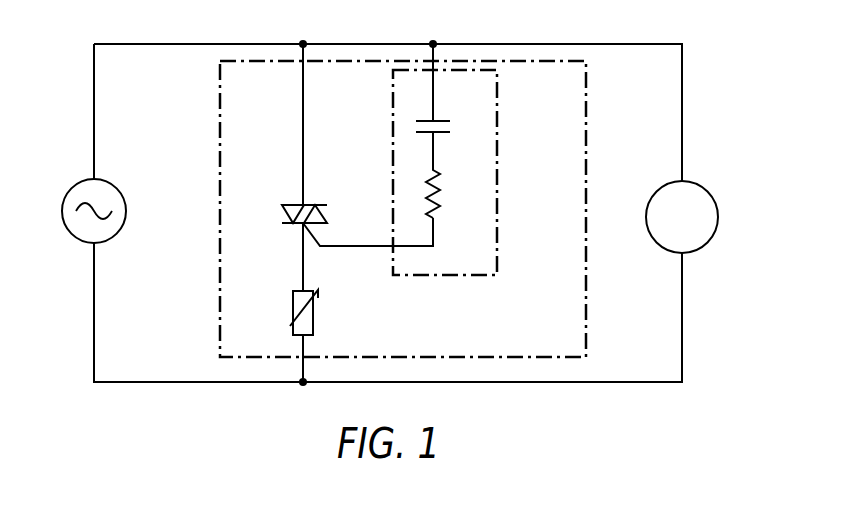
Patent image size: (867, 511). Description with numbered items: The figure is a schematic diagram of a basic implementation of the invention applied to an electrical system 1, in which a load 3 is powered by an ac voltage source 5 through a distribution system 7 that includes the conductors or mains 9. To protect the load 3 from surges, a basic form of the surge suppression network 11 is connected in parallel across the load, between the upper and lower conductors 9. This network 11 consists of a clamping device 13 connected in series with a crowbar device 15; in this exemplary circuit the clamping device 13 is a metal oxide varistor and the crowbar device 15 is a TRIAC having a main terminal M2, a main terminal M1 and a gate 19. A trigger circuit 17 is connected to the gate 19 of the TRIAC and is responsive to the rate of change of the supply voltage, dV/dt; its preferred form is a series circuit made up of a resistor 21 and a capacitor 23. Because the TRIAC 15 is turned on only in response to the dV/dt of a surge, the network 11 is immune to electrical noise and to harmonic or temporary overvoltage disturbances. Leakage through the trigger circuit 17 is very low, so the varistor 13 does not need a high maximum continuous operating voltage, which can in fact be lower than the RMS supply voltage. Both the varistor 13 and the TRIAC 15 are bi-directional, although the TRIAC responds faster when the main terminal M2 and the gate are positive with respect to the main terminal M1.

The electrical system 1 is at (779, 77).
The load 3 is at (700, 186).
The ac voltage source 5 is at (80, 186).
The distribution system 7 is at (695, 322).
The conductors or mains 9 is at (190, 44).
The surge suppression network 11 is at (220, 130).
The clamping device 13 is at (313, 325).
The crowbar device 15 is at (291, 205).
The trigger circuit 17 is at (480, 276).
The gate 19 is at (322, 244).
The resistor 21 is at (440, 192).
The capacitor 23 is at (448, 120).
The main terminal M1 is at (303, 224).
The main terminal M2 is at (304, 205).